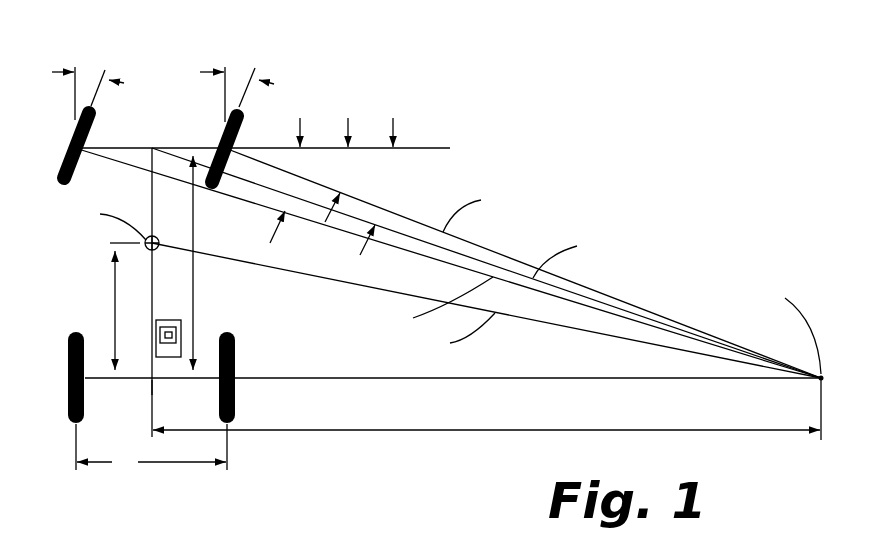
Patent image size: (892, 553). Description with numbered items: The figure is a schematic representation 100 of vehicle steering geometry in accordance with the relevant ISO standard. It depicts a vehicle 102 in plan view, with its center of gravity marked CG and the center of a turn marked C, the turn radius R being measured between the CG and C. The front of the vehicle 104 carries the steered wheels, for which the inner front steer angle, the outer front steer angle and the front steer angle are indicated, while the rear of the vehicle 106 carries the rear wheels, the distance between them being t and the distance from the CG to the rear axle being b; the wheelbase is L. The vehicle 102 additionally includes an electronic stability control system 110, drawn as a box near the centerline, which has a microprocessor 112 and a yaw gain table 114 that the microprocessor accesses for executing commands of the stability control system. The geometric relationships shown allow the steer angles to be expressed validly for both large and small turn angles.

The schematic representation 100 is at (607, 158).
The vehicle 102 is at (77, 265).
The front of the vehicle 104 is at (180, 56).
The rear of the vehicle 106 is at (166, 477).
The electronic stability control system 110 is at (205, 307).
The microprocessor 112 is at (177, 332).
The yaw gain table 114 is at (174, 338).